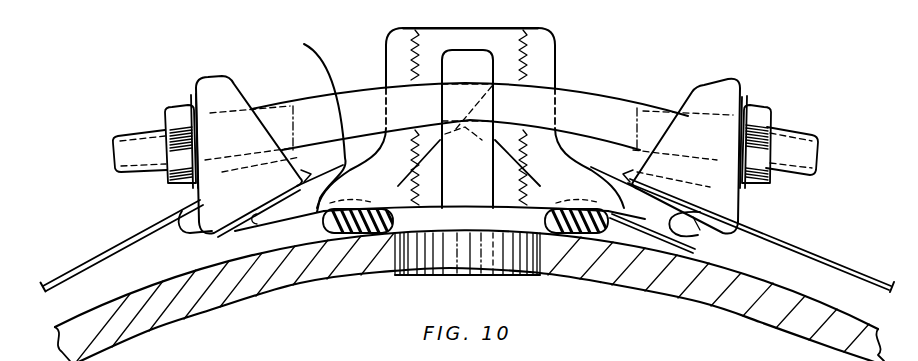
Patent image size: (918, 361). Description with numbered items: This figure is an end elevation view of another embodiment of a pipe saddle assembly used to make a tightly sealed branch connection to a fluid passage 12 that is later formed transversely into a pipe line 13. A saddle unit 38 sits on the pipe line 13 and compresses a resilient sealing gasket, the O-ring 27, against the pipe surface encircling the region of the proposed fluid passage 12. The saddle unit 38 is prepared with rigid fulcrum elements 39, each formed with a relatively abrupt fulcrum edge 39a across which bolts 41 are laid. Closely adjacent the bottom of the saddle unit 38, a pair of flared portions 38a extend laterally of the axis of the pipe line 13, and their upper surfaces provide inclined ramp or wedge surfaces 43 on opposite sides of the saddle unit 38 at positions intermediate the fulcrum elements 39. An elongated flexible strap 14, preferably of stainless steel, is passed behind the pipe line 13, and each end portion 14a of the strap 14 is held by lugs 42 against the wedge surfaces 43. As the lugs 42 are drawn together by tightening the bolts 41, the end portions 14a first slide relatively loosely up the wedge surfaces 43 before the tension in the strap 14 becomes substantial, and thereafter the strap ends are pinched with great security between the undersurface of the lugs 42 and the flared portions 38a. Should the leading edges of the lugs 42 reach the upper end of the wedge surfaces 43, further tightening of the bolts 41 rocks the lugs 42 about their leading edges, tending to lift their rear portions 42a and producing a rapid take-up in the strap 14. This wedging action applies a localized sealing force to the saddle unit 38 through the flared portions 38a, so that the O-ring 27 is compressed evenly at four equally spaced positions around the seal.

The fluid passage 12 is at (405, 258).
The pipe line 13 is at (128, 300).
The flexible strap 14 is at (88, 258).
The end portion of strap 14a is at (688, 245).
The O-ring 27 is at (385, 206).
The saddle unit 38 is at (557, 64).
The flared portions 38a is at (306, 228).
The fulcrum elements 39 is at (457, 62).
The fulcrum edge 39a is at (509, 30).
The bolts 41 is at (606, 104).
The lugs 42 is at (292, 153).
The rear portions of lugs 42a is at (180, 212).
The wedge surfaces 43 is at (304, 44).